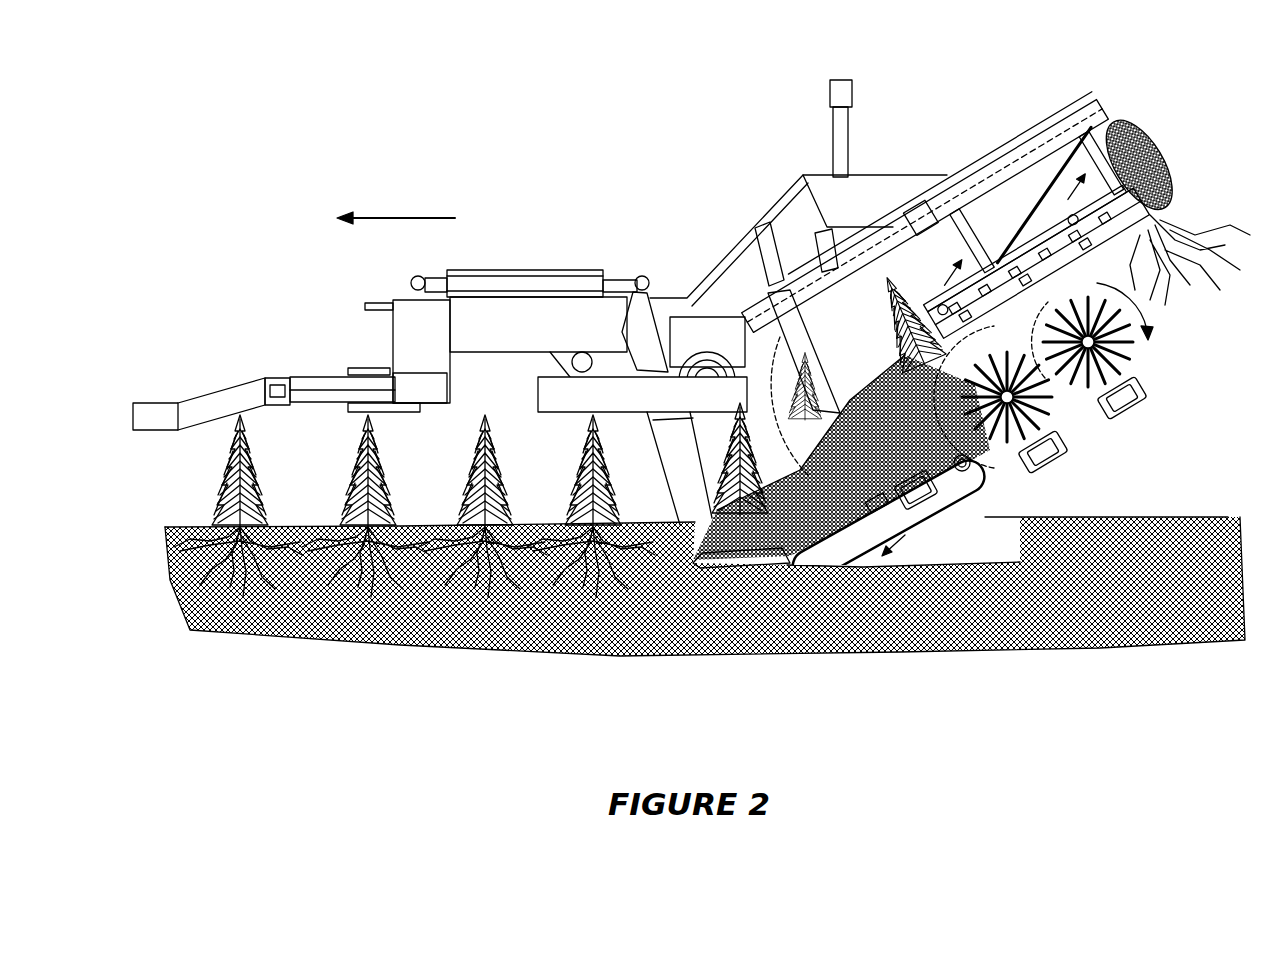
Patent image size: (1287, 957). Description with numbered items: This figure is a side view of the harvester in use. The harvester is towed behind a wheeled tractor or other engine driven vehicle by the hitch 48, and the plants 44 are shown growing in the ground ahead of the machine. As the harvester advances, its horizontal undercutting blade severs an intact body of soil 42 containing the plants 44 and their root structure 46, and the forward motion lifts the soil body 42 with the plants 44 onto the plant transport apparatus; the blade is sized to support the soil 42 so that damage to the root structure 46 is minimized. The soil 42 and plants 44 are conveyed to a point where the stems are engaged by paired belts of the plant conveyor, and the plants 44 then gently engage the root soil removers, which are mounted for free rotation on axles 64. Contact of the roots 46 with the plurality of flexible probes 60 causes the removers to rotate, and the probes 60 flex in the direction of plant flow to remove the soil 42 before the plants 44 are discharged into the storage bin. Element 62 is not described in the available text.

The body of soil 42 is at (662, 512).
The plants 44 is at (475, 437).
The root structure 46 is at (560, 593).
The hitch 48 is at (205, 390).
The flexible probes 60 is at (1133, 351).
The track 62 is at (1020, 442).
The axles 64 is at (1140, 342).